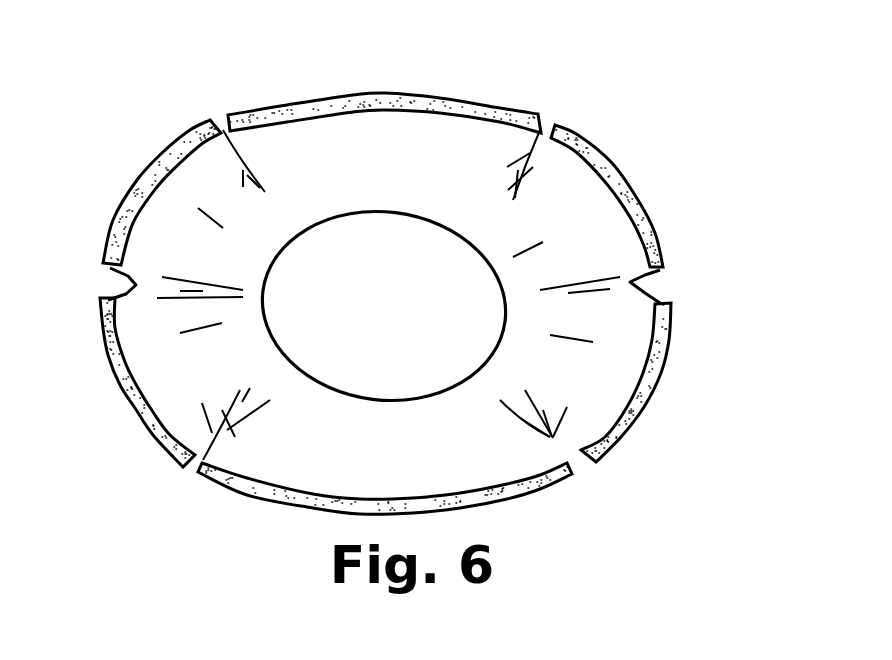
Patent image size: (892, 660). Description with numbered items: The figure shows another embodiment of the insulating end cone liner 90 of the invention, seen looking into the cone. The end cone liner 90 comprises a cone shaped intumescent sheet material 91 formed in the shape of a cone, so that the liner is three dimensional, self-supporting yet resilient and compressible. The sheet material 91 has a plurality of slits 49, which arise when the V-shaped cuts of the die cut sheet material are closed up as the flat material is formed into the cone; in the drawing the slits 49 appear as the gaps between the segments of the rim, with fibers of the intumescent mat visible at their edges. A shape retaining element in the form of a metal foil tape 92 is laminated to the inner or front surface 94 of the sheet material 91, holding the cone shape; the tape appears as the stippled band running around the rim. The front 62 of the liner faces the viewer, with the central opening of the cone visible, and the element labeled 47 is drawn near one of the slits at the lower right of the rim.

The insulating end cone liner 90 is at (654, 199).
The cone shaped intumescent sheet material 91 is at (632, 334).
The metal foil tape 92 is at (416, 147).
The inner or front surface 94 is at (136, 194).
The front 62 is at (157, 381).
The slits 49 is at (527, 150).
The fiber tuft 47 is at (553, 437).